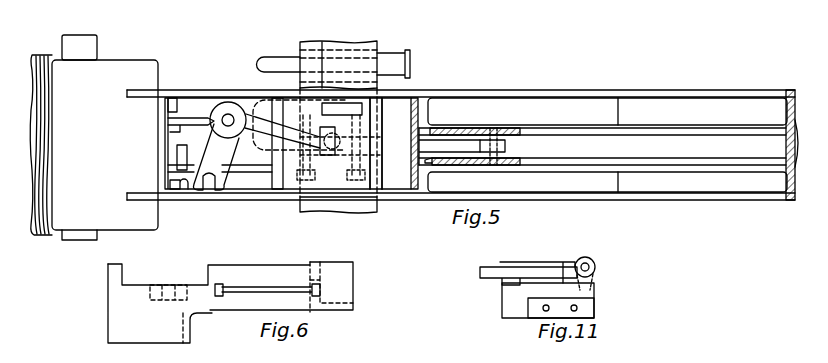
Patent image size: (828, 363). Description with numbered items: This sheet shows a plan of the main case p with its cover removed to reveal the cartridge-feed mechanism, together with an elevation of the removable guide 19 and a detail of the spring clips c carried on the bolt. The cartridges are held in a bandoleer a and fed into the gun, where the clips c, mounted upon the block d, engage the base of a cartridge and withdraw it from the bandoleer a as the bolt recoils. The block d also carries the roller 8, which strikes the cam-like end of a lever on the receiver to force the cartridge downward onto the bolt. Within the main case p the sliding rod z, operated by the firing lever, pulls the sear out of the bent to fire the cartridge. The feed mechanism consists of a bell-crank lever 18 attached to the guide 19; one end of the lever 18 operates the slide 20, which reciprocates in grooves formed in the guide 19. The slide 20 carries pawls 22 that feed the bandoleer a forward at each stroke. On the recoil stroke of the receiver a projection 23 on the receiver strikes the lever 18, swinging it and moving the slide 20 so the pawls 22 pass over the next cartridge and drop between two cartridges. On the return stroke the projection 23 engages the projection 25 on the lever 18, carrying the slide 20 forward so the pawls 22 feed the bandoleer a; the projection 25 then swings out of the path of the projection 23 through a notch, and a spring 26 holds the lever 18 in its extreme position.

In FIG. 5, the bandoleer a is at (365, 62).
In FIG. 5, the main case p is at (562, 93).
In FIG. 5, the sliding rod z is at (660, 136).
In FIG. 5, the clips c is at (427, 160).
In FIG. 11, the clips c is at (505, 272).
In FIG. 5, the block d is at (459, 145).
In FIG. 11, the block d is at (585, 294).
In FIG. 5, the roller 8 is at (505, 147).
In FIG. 11, the roller 8 is at (596, 267).
In FIG. 5, the bell-crank lever 18 is at (235, 112).
In FIG. 5, the guide 19 is at (277, 182).
In FIG. 6, the guide 19 is at (222, 270).
In FIG. 5, the slide 20 is at (365, 107).
In FIG. 5, the pawls 22 is at (317, 158).
In FIG. 5, the projection 23 is at (176, 191).
In FIG. 5, the projection 25 is at (208, 190).
In FIG. 5, the spring 26 is at (193, 117).